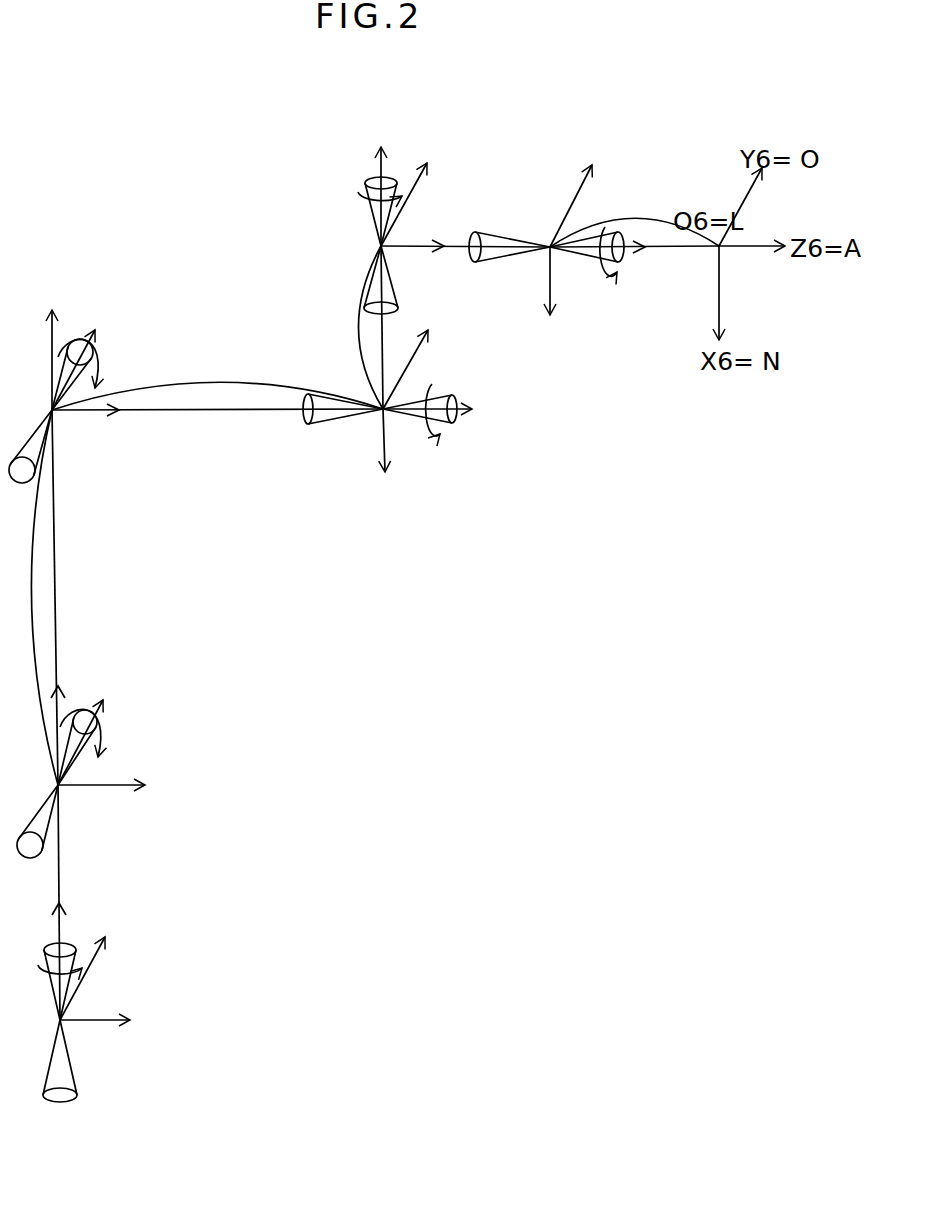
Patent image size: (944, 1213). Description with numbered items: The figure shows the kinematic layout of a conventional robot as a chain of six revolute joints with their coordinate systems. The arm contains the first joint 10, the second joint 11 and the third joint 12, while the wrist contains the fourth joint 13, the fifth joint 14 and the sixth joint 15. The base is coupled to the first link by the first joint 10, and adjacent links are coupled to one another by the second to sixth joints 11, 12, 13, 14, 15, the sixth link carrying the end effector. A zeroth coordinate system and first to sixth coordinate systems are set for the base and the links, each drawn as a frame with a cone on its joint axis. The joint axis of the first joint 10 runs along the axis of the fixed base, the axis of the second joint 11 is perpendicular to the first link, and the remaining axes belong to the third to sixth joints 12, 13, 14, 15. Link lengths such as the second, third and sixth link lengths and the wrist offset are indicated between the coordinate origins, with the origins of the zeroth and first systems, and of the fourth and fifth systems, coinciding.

The first joint 10 is at (102, 990).
The second joint 11 is at (133, 733).
The third joint 12 is at (67, 432).
The fourth joint 13 is at (355, 440).
The fifth joint 14 is at (345, 265).
The sixth joint 15 is at (600, 200).